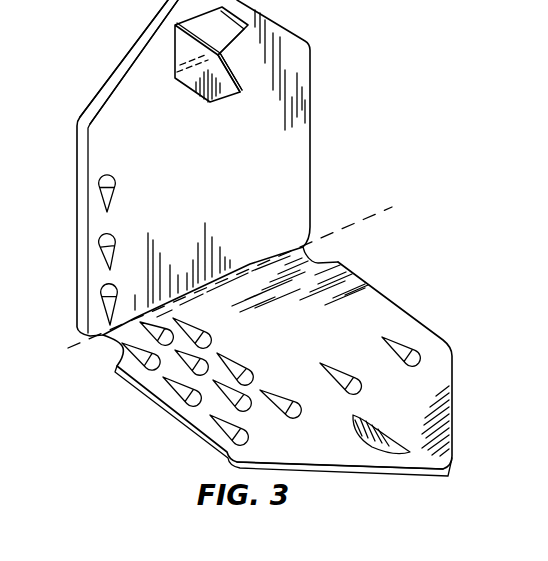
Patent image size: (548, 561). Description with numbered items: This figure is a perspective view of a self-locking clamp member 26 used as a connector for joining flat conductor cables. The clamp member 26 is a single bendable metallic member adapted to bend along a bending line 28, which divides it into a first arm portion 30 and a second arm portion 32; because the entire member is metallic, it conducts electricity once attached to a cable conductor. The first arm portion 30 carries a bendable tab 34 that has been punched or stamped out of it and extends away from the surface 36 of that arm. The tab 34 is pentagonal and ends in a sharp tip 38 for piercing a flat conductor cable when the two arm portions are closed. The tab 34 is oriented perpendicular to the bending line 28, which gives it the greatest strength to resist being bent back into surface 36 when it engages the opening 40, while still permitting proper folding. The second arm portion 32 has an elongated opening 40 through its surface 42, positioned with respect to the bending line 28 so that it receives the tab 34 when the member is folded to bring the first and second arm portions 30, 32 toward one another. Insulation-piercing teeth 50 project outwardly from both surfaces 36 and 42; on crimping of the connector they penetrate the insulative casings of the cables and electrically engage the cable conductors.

The self-locking clamp member 26 is at (240, 238).
The bending line 28 is at (358, 222).
The first arm portion 30 is at (300, 164).
The second arm portion 32 is at (368, 290).
The bendable tab 34 is at (193, 78).
The surface of the first arm portion 36 is at (108, 122).
The sharp tip 38 is at (237, 90).
The opening 40 is at (373, 438).
The surface of the second arm portion 42 is at (330, 443).
The insulation-piercing teeth 50 is at (100, 240).